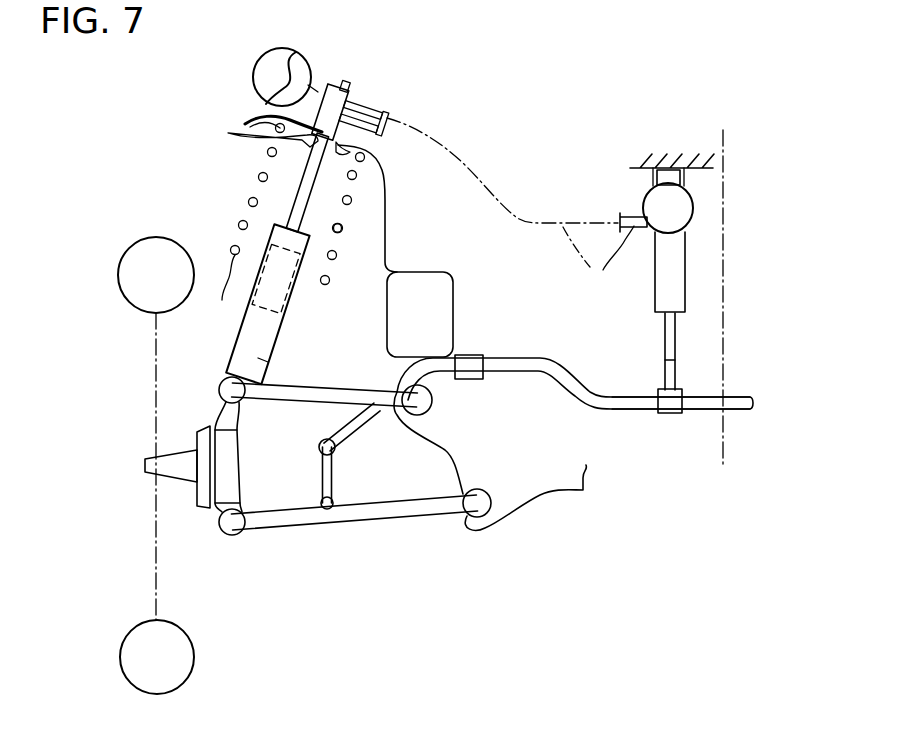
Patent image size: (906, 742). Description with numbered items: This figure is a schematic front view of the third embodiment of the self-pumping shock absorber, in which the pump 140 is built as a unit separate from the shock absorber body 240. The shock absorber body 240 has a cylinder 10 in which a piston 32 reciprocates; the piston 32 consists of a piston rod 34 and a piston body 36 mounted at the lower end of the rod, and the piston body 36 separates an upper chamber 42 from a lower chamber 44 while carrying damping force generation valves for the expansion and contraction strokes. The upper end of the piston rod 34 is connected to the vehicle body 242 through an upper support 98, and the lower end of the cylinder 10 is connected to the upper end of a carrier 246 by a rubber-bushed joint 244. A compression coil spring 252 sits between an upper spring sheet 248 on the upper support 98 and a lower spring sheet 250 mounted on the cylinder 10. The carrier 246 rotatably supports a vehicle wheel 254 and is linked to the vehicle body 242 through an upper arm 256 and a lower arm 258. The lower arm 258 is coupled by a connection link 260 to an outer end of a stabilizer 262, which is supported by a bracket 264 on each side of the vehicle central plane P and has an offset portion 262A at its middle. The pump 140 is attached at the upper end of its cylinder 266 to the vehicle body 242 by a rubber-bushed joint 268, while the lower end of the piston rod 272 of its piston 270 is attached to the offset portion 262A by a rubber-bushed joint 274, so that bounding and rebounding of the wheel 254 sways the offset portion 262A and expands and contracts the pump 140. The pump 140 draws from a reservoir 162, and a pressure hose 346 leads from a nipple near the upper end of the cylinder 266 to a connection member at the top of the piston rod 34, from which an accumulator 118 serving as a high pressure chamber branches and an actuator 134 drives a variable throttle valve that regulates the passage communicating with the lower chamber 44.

The cylinder 10 is at (273, 340).
The piston 32 is at (311, 208).
The piston rod 34 is at (306, 176).
The piston body 36 is at (263, 315).
The upper chamber 42 is at (300, 250).
The lower chamber 44 is at (257, 358).
The upper support 98 is at (300, 135).
The accumulator 118 is at (264, 48).
The actuator 134 is at (360, 110).
The pump 140 is at (695, 259).
The reservoir 162 is at (694, 200).
The shock absorber body 240 is at (233, 329).
The vehicle body 242 is at (420, 270).
The joint 244 is at (222, 390).
The carrier 246 is at (232, 483).
The upper spring sheet 248 is at (268, 116).
The lower spring sheet 250 is at (218, 288).
The compression coil spring 252 is at (239, 223).
The vehicle wheel 254 is at (194, 647).
The upper arm 256 is at (303, 400).
The lower arm 258 is at (397, 517).
The connection link 260 is at (336, 466).
The stabilizer 262 is at (578, 387).
The offset portion 262A is at (707, 408).
The bracket 264 is at (469, 376).
The cylinder 266 is at (687, 278).
The joint 268 is at (668, 172).
The piston 270 is at (679, 328).
The piston rod 272 is at (668, 368).
The joint 274 is at (667, 412).
The pressure hose 346 is at (602, 255).
The central plane P is at (723, 432).